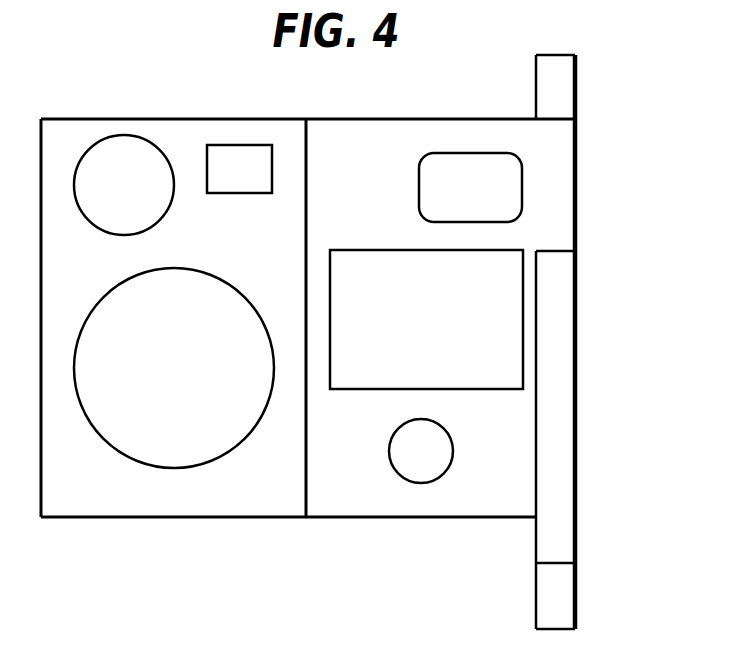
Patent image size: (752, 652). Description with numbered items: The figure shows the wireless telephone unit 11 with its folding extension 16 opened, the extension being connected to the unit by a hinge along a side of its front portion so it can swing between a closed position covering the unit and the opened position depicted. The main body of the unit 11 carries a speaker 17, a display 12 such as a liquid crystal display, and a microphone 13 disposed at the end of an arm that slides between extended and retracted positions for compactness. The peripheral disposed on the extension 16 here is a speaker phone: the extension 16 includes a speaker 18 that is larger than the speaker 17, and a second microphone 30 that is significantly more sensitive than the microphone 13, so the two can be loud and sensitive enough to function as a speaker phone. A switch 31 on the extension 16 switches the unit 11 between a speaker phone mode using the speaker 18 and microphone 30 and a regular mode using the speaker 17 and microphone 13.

The wireless telephone unit 11 is at (549, 190).
The display 12 is at (407, 334).
The microphone 13 is at (563, 603).
The extension 16 is at (73, 490).
The speaker 17 is at (454, 202).
The speaker 18 is at (157, 382).
The second microphone 30 is at (107, 197).
The switch 31 is at (258, 181).